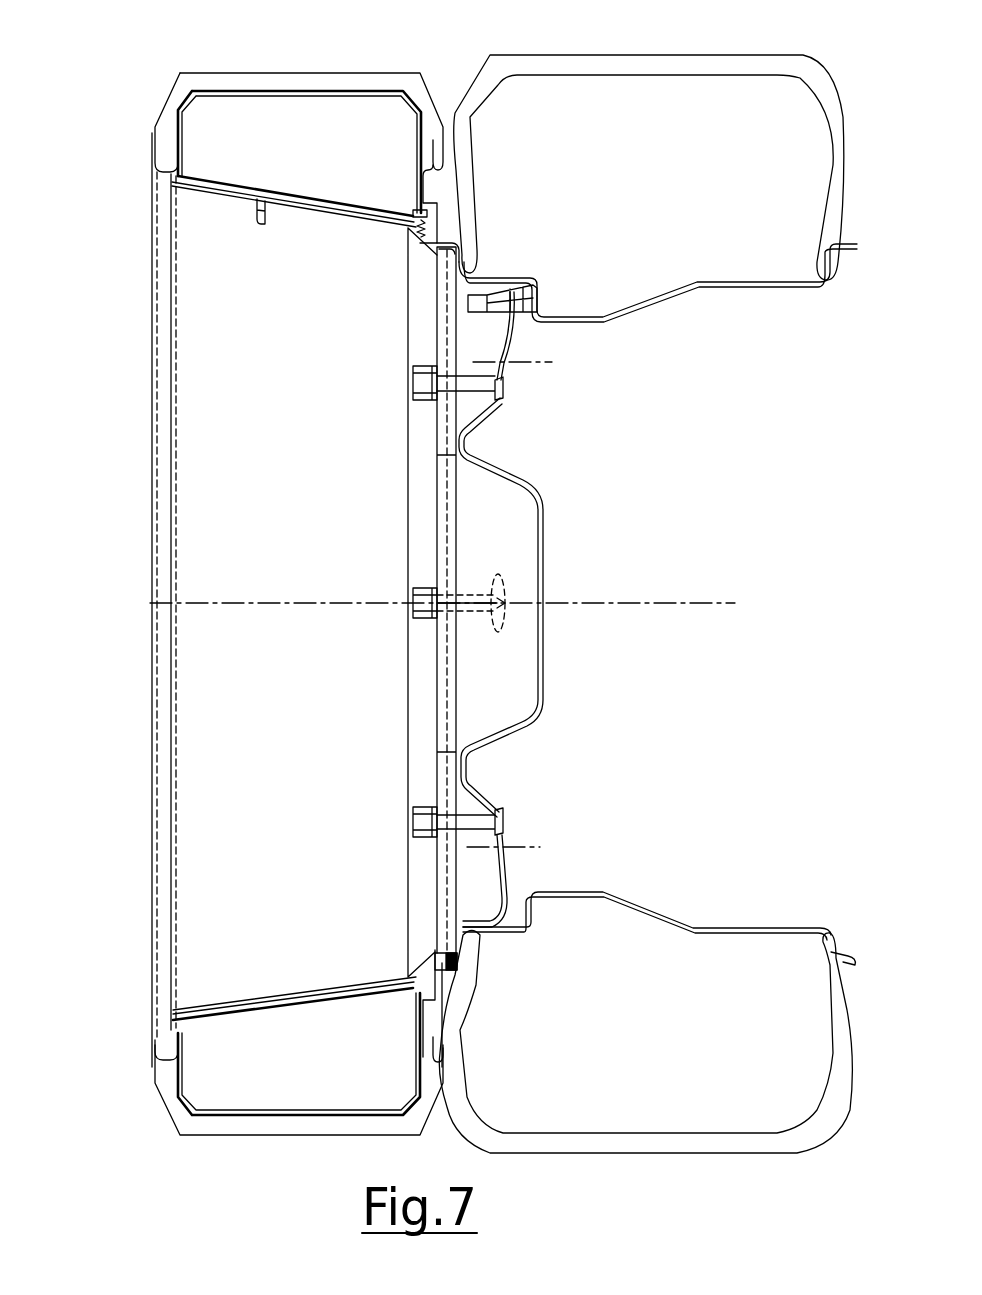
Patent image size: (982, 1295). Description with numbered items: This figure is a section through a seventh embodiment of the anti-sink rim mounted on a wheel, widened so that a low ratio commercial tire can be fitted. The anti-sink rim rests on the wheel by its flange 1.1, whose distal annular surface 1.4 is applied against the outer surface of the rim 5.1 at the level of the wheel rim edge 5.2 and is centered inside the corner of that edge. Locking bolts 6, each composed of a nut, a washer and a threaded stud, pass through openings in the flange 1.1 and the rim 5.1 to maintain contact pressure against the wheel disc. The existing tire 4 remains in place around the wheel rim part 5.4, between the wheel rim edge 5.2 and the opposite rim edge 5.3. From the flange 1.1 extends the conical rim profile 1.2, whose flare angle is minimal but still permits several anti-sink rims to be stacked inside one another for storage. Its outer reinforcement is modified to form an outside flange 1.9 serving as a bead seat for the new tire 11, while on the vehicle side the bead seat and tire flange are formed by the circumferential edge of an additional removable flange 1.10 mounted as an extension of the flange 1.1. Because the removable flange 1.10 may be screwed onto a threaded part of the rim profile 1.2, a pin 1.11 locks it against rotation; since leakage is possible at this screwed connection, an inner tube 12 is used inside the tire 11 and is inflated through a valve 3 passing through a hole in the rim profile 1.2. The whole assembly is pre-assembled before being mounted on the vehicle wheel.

The tire 11 is at (350, 83).
The inner tube 12 is at (262, 98).
The rim profile 1.2 is at (340, 212).
The valve 3 is at (255, 211).
The outside flange 1.9 is at (153, 183).
The pin 1.11 is at (411, 218).
The removable flange 1.10 is at (421, 190).
The distal annular surface 1.4 is at (453, 257).
The existing tire 4 is at (747, 65).
The flange 1.1 is at (445, 777).
The locking bolts 6 is at (470, 827).
The rim 5.1 is at (540, 526).
The wheel rim edge 5.2 is at (455, 962).
The wheel rim part 5.4 is at (644, 909).
The rim edge 5.3 is at (832, 937).